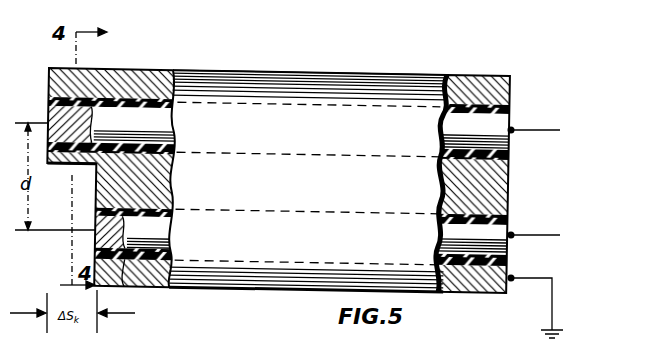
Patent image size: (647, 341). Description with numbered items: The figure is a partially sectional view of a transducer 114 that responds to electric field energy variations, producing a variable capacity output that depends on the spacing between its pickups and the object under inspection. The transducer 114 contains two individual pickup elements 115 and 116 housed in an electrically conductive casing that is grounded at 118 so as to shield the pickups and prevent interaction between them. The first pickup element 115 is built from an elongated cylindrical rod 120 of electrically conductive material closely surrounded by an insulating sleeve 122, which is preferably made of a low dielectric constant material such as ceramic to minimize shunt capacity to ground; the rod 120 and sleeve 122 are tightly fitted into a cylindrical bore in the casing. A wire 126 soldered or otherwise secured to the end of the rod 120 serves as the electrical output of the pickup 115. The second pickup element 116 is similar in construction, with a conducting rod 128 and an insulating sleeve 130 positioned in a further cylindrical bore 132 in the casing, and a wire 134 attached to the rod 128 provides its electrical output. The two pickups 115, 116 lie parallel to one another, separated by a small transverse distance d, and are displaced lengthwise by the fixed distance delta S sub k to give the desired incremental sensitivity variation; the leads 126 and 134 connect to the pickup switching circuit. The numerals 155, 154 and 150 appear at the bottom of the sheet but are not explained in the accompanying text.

The transducer 114 is at (104, 172).
The pickup element 115 is at (140, 95).
The insulating sleeve 122 is at (104, 100).
The cylindrical rod 120 is at (152, 126).
The pickup element 116 is at (152, 205).
The conducting rod 128 is at (136, 232).
The cylindrical bore 132 is at (128, 260).
The insulating sleeve 130 is at (152, 258).
The wire 126 is at (541, 124).
The wire 134 is at (540, 235).
The ground connection 118 is at (552, 306).
The electrode 155 is at (215, 333).
The electrode 154 is at (265, 333).
The electrode 150 is at (307, 333).